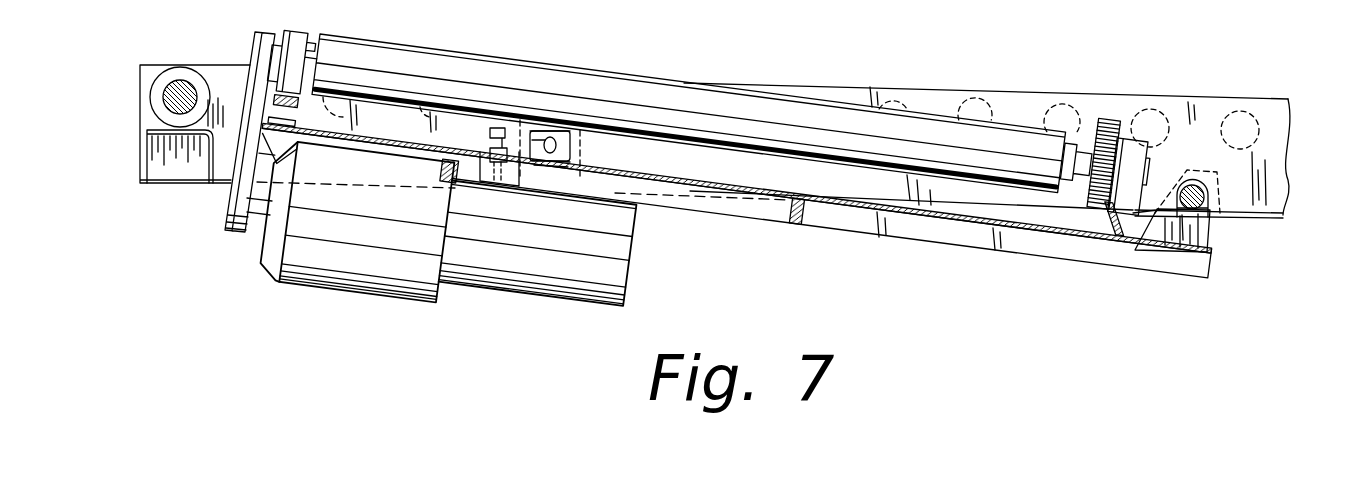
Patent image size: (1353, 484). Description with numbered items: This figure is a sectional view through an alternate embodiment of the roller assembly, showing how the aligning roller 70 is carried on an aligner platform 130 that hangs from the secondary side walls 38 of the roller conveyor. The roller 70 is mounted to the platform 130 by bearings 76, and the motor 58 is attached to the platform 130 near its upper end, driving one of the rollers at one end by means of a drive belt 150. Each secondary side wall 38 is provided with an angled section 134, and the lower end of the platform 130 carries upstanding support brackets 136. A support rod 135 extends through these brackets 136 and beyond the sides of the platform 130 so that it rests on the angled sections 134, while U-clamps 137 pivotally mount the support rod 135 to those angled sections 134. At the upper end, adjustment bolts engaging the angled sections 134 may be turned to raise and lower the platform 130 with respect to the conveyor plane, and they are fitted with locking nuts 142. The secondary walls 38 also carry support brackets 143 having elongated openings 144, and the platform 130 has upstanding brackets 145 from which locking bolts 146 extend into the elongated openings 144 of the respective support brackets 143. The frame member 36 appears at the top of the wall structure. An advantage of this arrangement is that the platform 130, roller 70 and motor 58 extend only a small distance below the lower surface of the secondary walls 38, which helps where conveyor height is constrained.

The frame top member 36 is at (1280, 89).
The secondary side walls 38 is at (1275, 159).
The motor 58 is at (440, 287).
The roller 70 is at (773, 110).
The bearings 76 is at (300, 38).
The aligner platform 130 is at (1210, 250).
The angled section 134 is at (1270, 213).
The support rod 135 is at (1207, 203).
The support brackets 136 is at (1170, 236).
The U-clamps 137 is at (1203, 178).
The locking nuts 142 is at (482, 152).
The support brackets 143 is at (582, 153).
The elongated openings 144 is at (557, 137).
The upstanding brackets 145 is at (540, 131).
The locking bolts 146 is at (562, 163).
The drive belt 150 is at (235, 231).